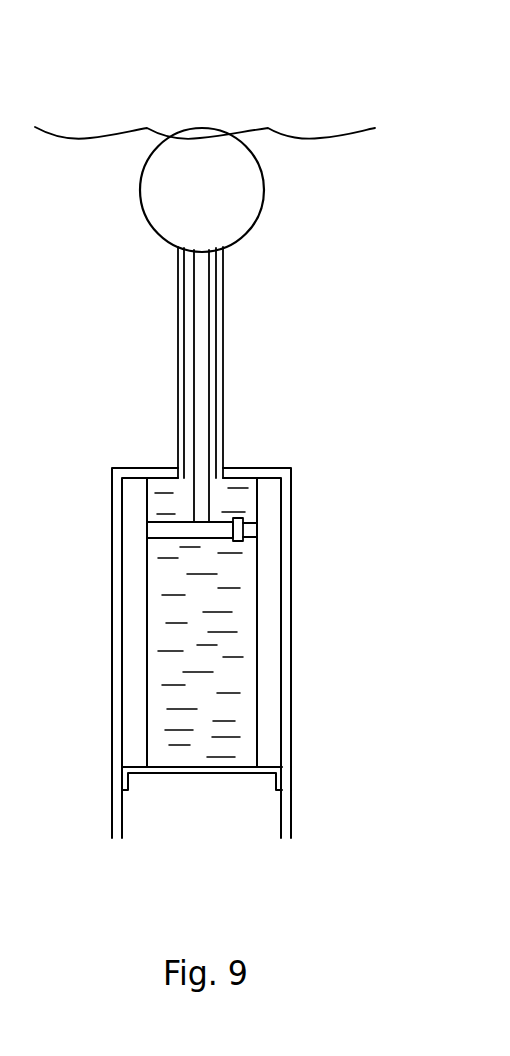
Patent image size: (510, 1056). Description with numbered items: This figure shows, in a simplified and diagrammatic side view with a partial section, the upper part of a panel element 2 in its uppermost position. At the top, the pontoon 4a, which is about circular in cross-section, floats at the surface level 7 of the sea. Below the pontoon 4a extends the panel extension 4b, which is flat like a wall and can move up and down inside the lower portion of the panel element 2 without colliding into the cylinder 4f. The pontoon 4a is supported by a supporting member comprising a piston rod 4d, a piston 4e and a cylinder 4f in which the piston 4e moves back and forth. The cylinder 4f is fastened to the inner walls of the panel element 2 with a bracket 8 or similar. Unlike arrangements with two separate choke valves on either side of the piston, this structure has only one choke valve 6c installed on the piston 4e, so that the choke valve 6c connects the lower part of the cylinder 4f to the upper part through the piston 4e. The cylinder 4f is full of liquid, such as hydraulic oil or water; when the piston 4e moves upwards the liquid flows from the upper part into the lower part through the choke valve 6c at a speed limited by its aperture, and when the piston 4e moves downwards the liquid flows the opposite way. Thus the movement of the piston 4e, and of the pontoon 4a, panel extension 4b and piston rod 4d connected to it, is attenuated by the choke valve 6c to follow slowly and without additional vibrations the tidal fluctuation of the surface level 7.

The surface level 7 is at (316, 138).
The pontoon 4a is at (148, 207).
The panel extension 4b is at (182, 338).
The piston rod 4d is at (202, 375).
The panel element 2 is at (285, 607).
The cylinder 4f is at (250, 730).
The piston 4e is at (150, 528).
The choke valve 6c is at (243, 530).
The bracket 8 is at (127, 767).